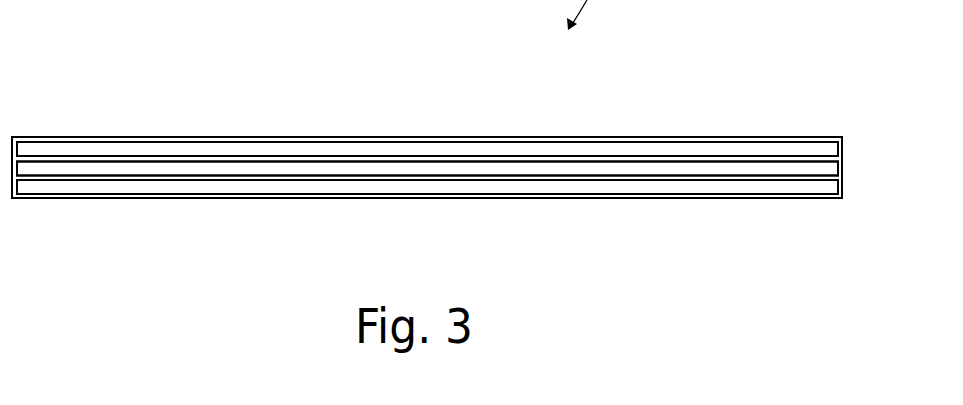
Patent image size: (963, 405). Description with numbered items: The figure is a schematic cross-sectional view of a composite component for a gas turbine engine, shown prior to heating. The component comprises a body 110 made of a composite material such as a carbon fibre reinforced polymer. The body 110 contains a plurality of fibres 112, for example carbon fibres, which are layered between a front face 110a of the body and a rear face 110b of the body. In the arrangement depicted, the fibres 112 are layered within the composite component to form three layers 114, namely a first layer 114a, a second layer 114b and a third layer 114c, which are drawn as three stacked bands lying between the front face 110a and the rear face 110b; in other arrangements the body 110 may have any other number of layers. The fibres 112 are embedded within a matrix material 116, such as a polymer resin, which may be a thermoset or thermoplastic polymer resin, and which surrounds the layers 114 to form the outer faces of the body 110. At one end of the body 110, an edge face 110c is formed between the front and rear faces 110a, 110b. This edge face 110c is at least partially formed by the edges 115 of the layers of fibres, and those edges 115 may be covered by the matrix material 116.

The body 110 is at (454, 138).
The front face 110a is at (358, 138).
The rear face 110b is at (132, 198).
The edge face 110c is at (843, 170).
The fibres 112 is at (548, 152).
The layers 114 is at (427, 158).
The first layer 114a is at (115, 149).
The second layer 114b is at (210, 170).
The third layer 114c is at (271, 187).
The edges of the layers of fibres 115 is at (841, 138).
The matrix material 116 is at (700, 138).